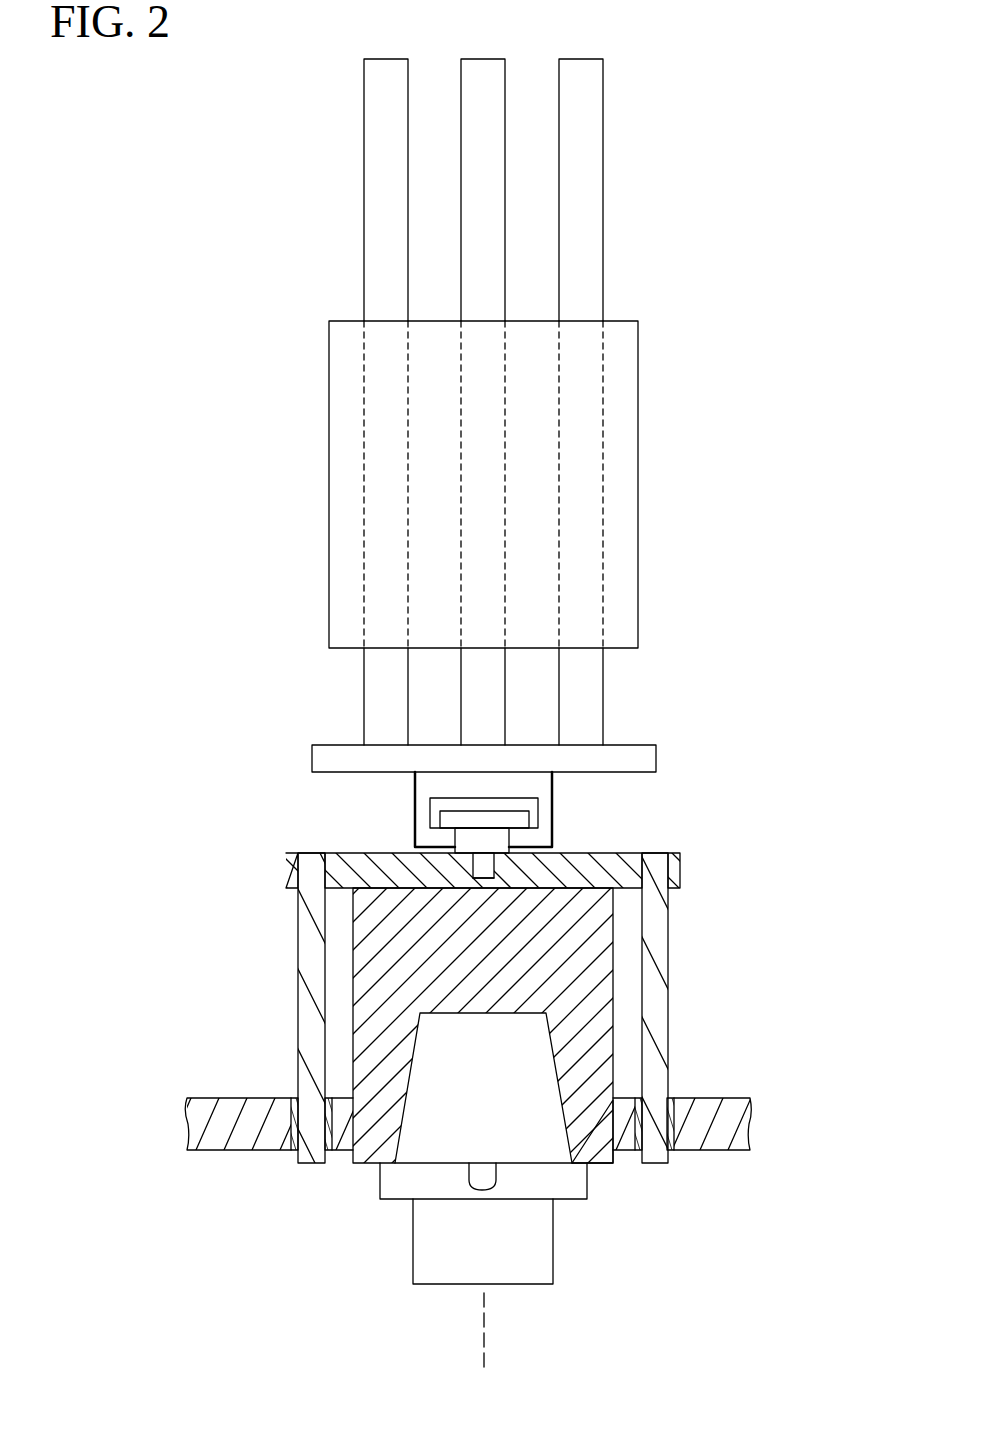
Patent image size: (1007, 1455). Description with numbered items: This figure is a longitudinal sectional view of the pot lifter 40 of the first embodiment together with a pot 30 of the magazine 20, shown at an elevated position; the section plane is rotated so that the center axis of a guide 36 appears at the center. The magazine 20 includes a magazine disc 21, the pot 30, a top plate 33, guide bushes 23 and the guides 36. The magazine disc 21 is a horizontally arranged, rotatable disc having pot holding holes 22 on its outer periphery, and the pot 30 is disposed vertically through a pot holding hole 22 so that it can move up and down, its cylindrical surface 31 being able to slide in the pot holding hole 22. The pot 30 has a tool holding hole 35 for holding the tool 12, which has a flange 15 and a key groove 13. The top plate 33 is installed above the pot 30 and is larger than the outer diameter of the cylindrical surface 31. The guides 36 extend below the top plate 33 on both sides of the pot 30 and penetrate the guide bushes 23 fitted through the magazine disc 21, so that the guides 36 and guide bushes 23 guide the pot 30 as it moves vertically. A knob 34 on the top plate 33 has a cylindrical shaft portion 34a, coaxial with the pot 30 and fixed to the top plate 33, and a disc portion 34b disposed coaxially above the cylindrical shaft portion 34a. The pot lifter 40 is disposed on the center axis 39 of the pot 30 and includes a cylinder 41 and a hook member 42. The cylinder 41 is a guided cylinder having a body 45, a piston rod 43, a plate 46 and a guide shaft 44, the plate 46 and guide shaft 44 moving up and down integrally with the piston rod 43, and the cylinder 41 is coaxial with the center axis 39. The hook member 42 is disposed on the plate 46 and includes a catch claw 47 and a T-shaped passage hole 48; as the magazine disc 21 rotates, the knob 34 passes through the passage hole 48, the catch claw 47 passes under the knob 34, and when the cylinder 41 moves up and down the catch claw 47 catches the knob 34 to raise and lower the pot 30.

The pot lifter 40 is at (787, 151).
The cylinder 41 is at (758, 222).
The hook member 42 is at (746, 790).
The piston rod 43 is at (505, 275).
The guide shaft 44 is at (603, 232).
The body 45 is at (638, 428).
The plate 46 is at (657, 758).
The catch claw 47 is at (545, 847).
The passage hole 48 is at (552, 815).
The knob 34 is at (186, 792).
The cylindrical shaft portion 34a is at (455, 842).
The disc portion 34b is at (440, 818).
The top plate 33 is at (286, 878).
The guide 36 is at (297, 975).
The magazine 20 is at (738, 935).
The pot 30 is at (531, 1025).
The cylindrical surface 31 is at (613, 968).
The tool holding hole 35 is at (537, 1055).
The pot holding hole 22 is at (595, 1100).
The magazine disc 21 is at (240, 1152).
The guide bush 23 is at (300, 1125).
The flange 15 is at (380, 1183).
The key groove 13 is at (493, 1199).
The tool 12 is at (553, 1253).
The center axis 39 is at (486, 1345).